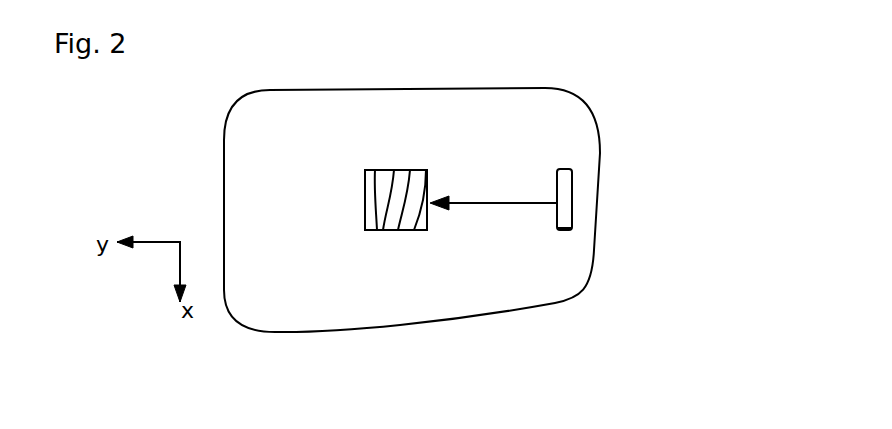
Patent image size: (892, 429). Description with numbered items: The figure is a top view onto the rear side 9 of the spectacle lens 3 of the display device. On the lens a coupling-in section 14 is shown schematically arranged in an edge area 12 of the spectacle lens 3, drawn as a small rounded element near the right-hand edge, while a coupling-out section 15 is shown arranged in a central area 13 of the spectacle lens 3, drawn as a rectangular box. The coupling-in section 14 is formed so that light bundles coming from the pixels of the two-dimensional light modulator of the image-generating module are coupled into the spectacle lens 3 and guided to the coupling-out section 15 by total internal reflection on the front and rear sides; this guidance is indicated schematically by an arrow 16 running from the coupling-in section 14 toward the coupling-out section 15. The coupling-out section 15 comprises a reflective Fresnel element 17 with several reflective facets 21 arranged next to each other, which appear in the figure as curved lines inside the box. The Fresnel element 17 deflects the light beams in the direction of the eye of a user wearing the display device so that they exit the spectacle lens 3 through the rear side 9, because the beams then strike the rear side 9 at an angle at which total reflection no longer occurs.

The spectacle lens 3 is at (238, 176).
The rear side 9 is at (247, 203).
The edge area 12 is at (563, 236).
The central area 13 is at (410, 237).
The coupling-in section 14 is at (565, 176).
The coupling-out section 15 is at (378, 230).
The arrow 16 is at (497, 206).
The reflective Fresnel element 17 is at (365, 217).
The reflective facets 21 is at (372, 176).